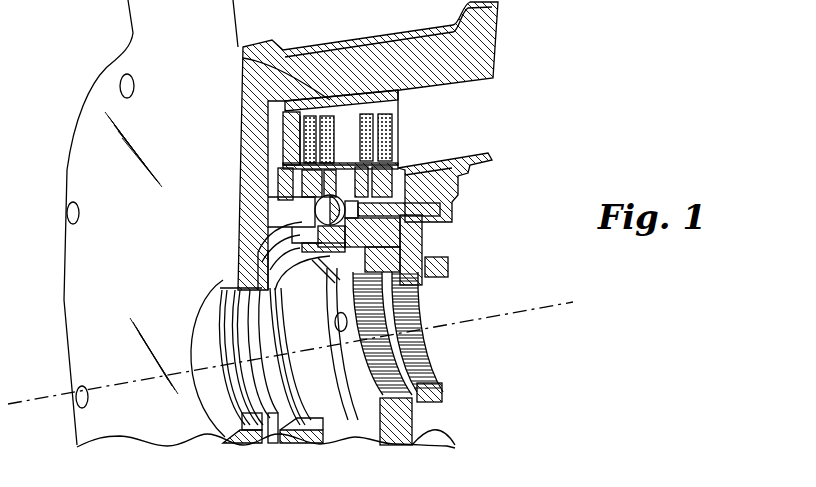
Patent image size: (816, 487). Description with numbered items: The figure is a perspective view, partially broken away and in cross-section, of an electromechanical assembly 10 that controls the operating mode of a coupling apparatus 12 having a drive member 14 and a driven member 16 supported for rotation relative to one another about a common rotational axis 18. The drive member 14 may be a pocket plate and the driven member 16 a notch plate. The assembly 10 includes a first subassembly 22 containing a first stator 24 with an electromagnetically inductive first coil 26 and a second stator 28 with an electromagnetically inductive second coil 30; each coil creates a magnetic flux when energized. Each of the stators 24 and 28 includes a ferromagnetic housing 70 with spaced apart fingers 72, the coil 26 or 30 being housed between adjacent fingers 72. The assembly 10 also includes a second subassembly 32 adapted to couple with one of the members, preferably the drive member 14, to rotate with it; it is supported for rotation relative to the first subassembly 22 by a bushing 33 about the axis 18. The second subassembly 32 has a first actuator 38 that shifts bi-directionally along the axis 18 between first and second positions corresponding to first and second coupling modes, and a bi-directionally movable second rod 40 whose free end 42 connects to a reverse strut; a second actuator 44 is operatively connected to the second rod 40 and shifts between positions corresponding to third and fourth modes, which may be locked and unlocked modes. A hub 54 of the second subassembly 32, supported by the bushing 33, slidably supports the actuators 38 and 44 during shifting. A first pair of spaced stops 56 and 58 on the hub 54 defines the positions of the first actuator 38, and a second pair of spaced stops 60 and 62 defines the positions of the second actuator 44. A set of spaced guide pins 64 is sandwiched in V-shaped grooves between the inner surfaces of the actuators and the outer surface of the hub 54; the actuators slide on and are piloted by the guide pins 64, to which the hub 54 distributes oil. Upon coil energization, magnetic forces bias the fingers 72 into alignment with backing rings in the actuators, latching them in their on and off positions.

The electromechanical assembly 10 is at (555, 92).
The coupling apparatus 12 is at (512, 152).
The drive member 14 is at (428, 250).
The driven member 16 is at (455, 269).
The rotational axis 18 is at (545, 313).
The first subassembly 22 is at (303, 102).
The first stator 24 is at (243, 60).
The first coil 26 is at (300, 150).
The second stator 28 is at (372, 105).
The second coil 30 is at (378, 113).
The second subassembly 32 is at (285, 237).
The bushing 33 is at (290, 270).
The first actuator 38 is at (282, 216).
The second rod 40 is at (438, 218).
The free end 42 is at (448, 205).
The second actuator 44 is at (410, 165).
The hub 54 is at (333, 282).
The stop 56 is at (292, 262).
The stop 58 is at (392, 350).
The stop 60 is at (420, 327).
The stop 62 is at (428, 246).
The guide pins 64 is at (225, 292).
The ferromagnetic housing 70 is at (283, 128).
The fingers 72 is at (400, 134).